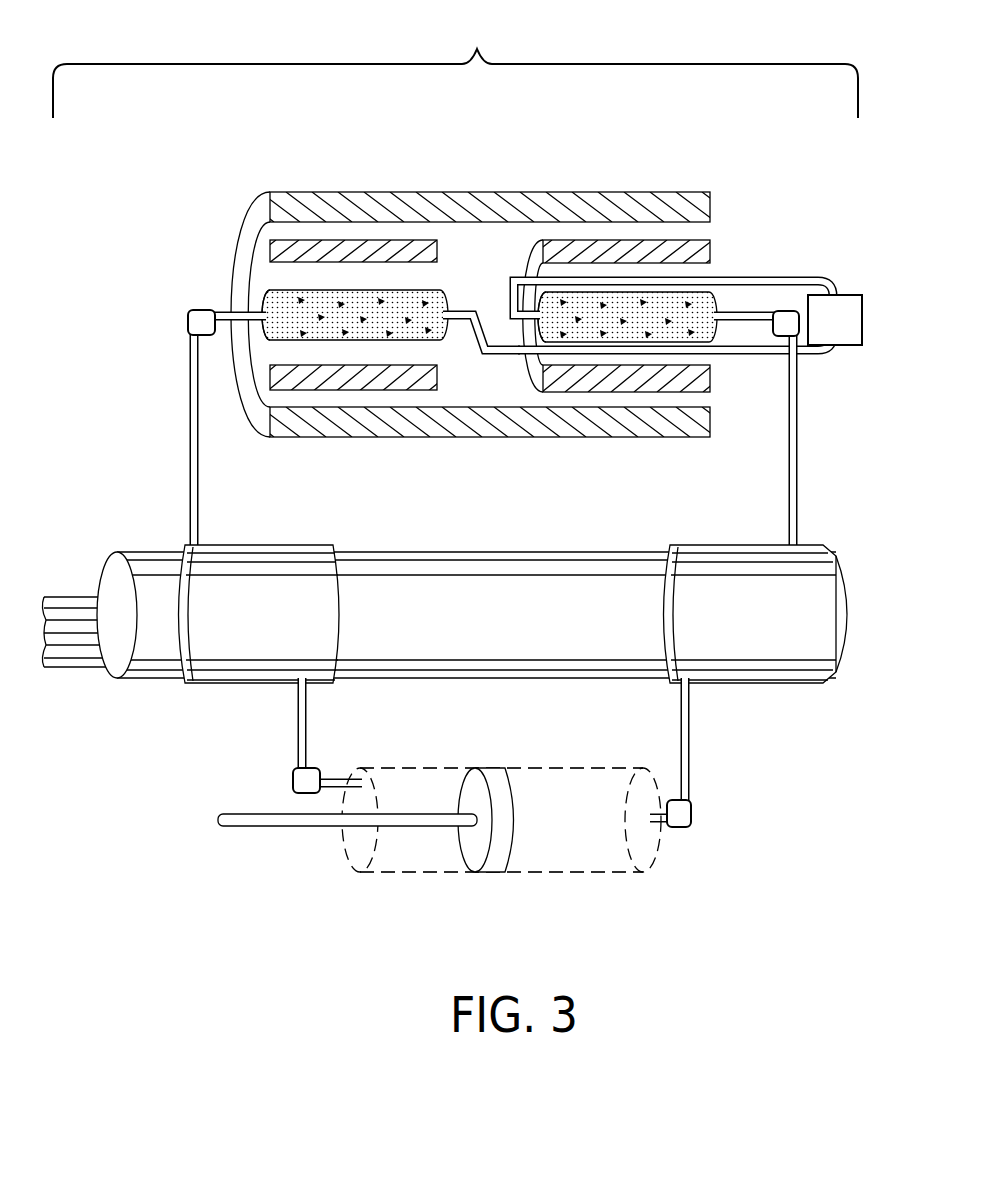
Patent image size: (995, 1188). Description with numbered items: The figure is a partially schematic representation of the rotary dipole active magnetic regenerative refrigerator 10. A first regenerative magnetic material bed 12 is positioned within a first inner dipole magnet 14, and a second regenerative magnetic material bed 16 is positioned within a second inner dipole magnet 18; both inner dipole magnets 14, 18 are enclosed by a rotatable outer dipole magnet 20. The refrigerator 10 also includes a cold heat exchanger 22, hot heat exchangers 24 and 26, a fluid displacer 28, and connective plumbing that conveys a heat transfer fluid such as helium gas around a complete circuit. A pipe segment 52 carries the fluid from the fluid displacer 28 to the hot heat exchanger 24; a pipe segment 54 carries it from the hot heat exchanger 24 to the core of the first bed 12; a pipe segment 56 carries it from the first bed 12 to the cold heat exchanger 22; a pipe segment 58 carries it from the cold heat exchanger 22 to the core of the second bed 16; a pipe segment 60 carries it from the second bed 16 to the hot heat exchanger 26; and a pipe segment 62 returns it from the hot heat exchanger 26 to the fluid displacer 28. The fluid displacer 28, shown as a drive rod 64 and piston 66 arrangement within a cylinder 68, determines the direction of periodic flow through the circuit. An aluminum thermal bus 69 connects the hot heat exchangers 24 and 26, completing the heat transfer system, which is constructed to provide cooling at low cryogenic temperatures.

The rotary dipole active magnetic regenerative refrigerator 10 is at (455, 67).
The first regenerative magnetic material bed 12 is at (320, 300).
The first inner dipole magnet 14 is at (377, 247).
The second regenerative magnetic material bed 16 is at (622, 298).
The second inner dipole magnet 18 is at (570, 247).
The rotatable outer dipole magnet 20 is at (480, 196).
The cold heat exchanger 22 is at (851, 295).
The hot heat exchanger 24 is at (238, 631).
The hot heat exchanger 26 is at (748, 631).
The fluid displacer 28 is at (573, 872).
The pipe segment 52 is at (298, 718).
The pipe segment 54 is at (187, 423).
The pipe segment 56 is at (465, 311).
The pipe segment 58 is at (757, 277).
The pipe segment 60 is at (800, 470).
The pipe segment 62 is at (690, 727).
The drive rod 64 is at (310, 828).
The piston 66 is at (507, 843).
The cylinder 68 is at (417, 768).
The aluminum thermal bus 69 is at (481, 631).